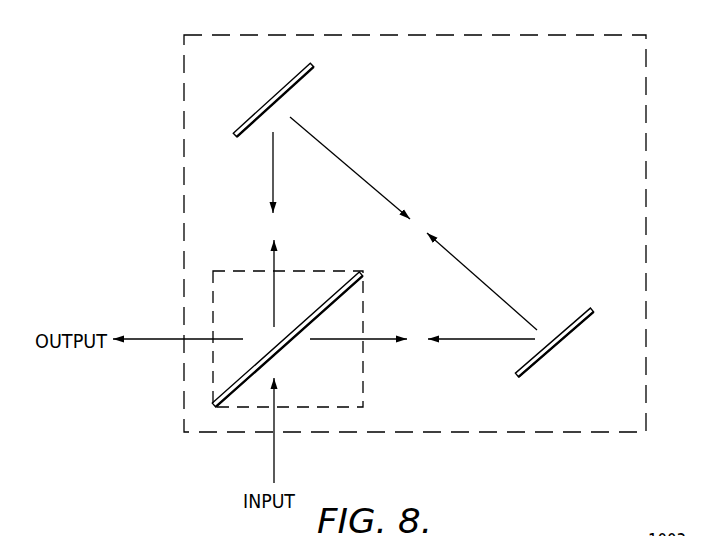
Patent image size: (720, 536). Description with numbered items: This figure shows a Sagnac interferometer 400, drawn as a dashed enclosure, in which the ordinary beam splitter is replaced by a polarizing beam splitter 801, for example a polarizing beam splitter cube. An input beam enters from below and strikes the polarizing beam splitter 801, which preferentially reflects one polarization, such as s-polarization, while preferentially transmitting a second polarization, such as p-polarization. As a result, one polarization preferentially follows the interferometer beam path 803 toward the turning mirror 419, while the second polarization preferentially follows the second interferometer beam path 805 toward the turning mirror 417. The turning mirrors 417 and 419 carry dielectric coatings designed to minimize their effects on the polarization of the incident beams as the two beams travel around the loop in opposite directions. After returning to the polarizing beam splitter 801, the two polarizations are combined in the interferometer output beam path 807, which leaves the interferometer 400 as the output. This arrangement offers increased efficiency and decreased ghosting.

The Sagnac interferometer 400 is at (655, 99).
The turning mirror 417 is at (313, 67).
The turning mirror 419 is at (586, 311).
The polarizing beam splitter 801 is at (359, 276).
The interferometer beam path 803 is at (384, 342).
The second interferometer beam path 805 is at (270, 256).
The interferometer output beam path 807 is at (163, 342).